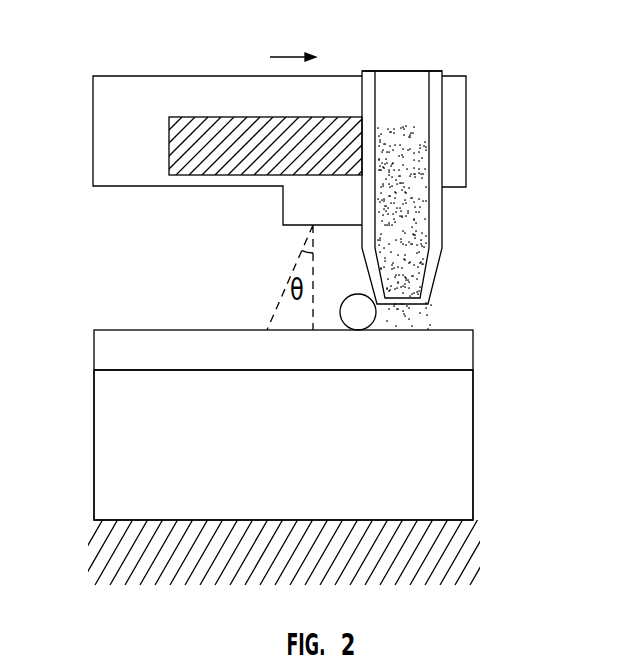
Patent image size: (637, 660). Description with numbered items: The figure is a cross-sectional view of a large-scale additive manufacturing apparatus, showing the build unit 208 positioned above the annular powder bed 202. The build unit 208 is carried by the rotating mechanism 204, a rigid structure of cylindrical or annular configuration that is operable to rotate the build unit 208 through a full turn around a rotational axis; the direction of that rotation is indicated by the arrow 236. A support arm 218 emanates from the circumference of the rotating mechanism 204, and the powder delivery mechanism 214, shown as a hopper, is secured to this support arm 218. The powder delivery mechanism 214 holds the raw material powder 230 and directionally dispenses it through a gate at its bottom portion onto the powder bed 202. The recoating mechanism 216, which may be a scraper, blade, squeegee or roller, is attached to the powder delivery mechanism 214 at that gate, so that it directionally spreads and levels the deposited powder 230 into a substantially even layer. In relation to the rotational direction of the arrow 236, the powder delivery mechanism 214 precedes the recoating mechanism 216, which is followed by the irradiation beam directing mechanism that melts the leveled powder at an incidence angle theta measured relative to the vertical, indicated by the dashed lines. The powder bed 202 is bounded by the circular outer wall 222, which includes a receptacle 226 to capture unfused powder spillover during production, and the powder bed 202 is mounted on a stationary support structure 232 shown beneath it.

The annular powder bed 202 is at (349, 425).
The rotating mechanism 204 is at (93, 133).
The build unit 208 is at (521, 72).
The powder delivery mechanism 214 is at (437, 71).
The recoating mechanism 216 is at (356, 294).
The support arm 218 is at (169, 148).
The circular outer wall 222 is at (460, 423).
The receptacle 226 is at (460, 352).
The raw material powder 230 is at (418, 222).
The stationary support structure 232 is at (465, 545).
The arrow indicating rotational direction 236 is at (288, 55).